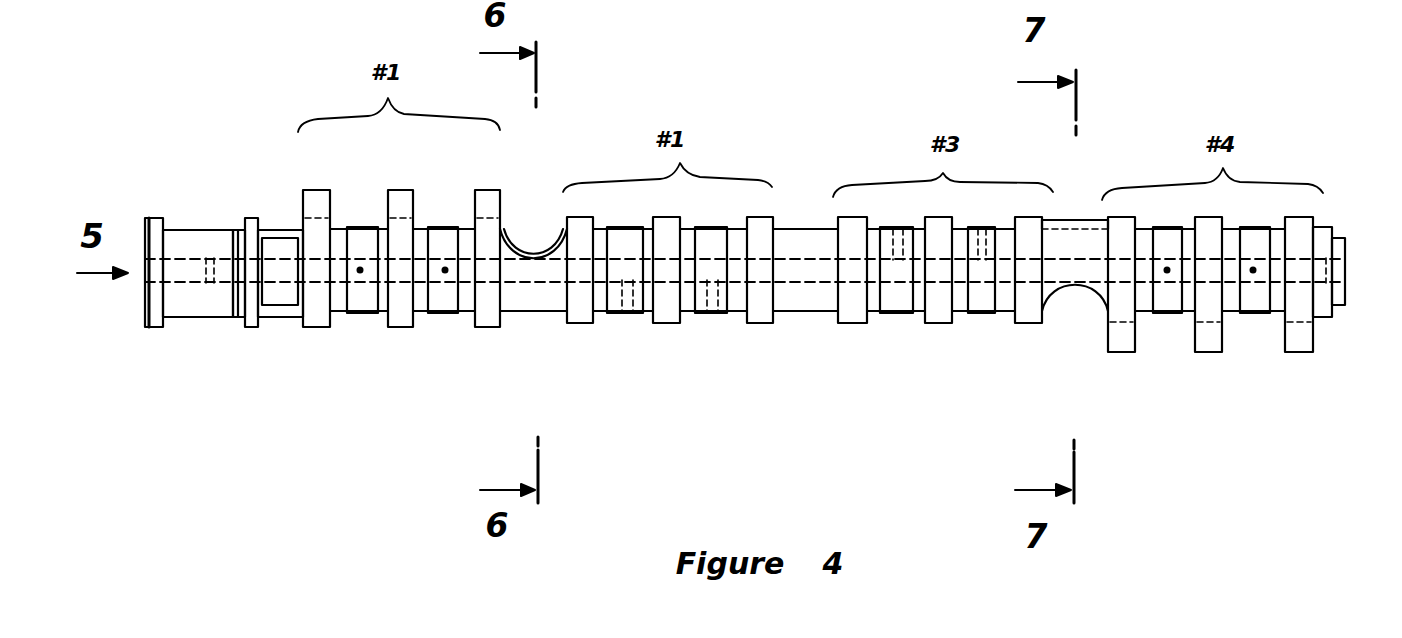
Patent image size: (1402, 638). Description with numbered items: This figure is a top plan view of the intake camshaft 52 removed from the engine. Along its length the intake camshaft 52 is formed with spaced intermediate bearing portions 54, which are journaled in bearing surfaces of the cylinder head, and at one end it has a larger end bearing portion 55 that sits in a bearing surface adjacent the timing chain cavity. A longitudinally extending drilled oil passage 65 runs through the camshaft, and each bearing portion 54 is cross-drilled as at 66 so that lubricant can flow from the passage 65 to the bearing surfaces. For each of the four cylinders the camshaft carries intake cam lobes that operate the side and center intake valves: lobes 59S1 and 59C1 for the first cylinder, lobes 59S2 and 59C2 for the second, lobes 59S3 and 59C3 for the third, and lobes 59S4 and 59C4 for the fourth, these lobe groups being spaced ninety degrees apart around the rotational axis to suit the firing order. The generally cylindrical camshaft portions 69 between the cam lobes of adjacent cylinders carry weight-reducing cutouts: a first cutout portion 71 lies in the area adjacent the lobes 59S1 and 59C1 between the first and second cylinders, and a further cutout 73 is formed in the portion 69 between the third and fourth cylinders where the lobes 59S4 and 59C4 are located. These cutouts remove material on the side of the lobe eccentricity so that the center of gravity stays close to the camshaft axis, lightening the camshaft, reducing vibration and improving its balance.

The intake camshaft 52 is at (805, 210).
The intermediate bearing portions 54 is at (808, 353).
The end bearing portion 55 is at (190, 237).
The drilled oil passage 65 is at (280, 275).
The cross-drilled holes 66 is at (817, 365).
The camshaft portions between cam lobes 69 is at (820, 256).
The first cutout portion 71 is at (546, 248).
The first cutout 73 is at (1093, 288).
The side intake cam lobe for cylinder one 59S1 is at (353, 207).
The center intake cam lobe for cylinder one 59C1 is at (390, 207).
The side intake cam lobe for cylinder two 59S2 is at (682, 357).
The center intake cam lobe for cylinder two 59C2 is at (672, 323).
The side intake cam lobe for cylinder three 59S3 is at (934, 335).
The center intake cam lobe for cylinder three 59C3 is at (943, 320).
The side intake cam lobe for cylinder four 59S4 is at (1236, 327).
The center intake cam lobe for cylinder four 59C4 is at (1213, 352).